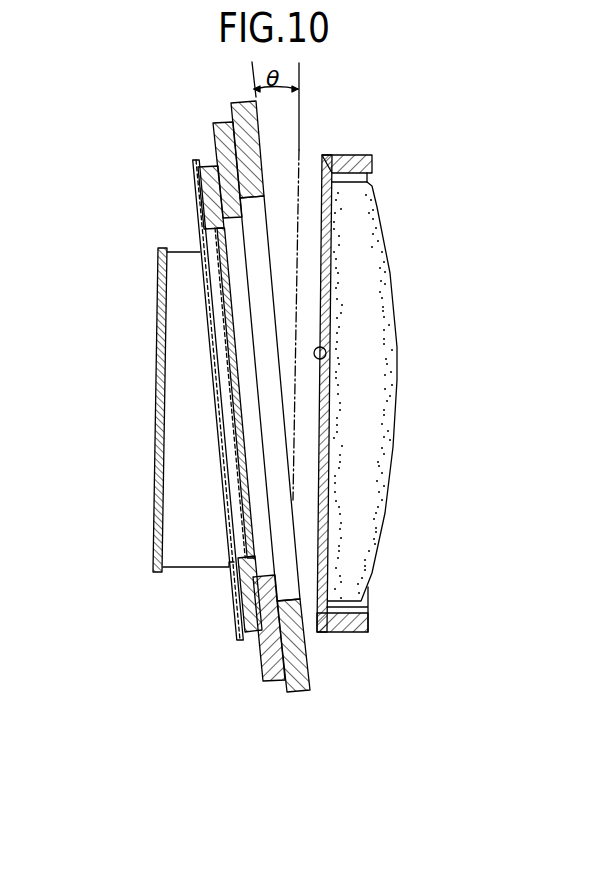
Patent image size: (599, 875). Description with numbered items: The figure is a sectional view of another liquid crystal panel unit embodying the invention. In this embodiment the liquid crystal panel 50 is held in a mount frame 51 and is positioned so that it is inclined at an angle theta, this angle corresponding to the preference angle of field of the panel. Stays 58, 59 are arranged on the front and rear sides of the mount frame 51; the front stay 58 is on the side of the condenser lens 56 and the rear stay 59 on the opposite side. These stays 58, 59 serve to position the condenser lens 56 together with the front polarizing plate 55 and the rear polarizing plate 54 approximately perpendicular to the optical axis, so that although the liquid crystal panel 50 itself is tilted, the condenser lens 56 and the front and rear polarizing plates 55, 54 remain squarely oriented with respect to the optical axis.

The liquid crystal panel 50 is at (220, 379).
The mount frame 51 is at (213, 134).
The rear polarizing plate 54 is at (154, 465).
The front polarizing plate 55 is at (325, 358).
The condenser lens 56 is at (396, 318).
The front stay 58 is at (299, 150).
The rear stay 59 is at (194, 545).